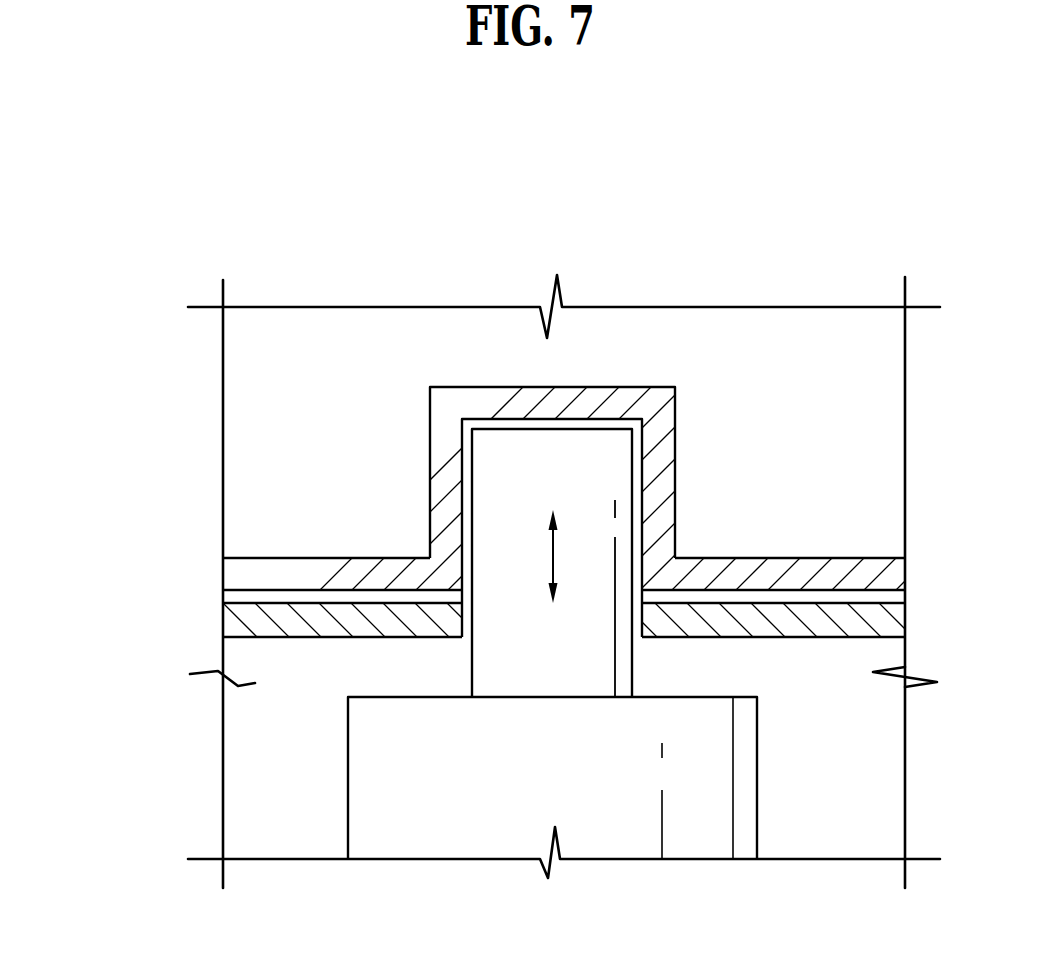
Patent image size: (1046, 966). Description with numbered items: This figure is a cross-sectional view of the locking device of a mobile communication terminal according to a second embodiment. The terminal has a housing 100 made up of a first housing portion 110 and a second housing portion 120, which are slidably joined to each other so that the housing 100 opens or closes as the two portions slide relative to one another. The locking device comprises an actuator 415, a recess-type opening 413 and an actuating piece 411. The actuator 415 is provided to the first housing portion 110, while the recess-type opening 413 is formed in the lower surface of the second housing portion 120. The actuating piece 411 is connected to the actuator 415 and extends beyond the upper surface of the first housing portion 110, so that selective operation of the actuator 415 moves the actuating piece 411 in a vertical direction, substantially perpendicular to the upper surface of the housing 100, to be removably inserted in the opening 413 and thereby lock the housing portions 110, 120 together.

The housing 100 is at (505, 595).
The first housing portion 110 is at (301, 640).
The second housing portion 120 is at (301, 554).
The actuating piece 411 is at (608, 472).
The recess-type opening 413 is at (498, 420).
The actuator 415 is at (415, 835).